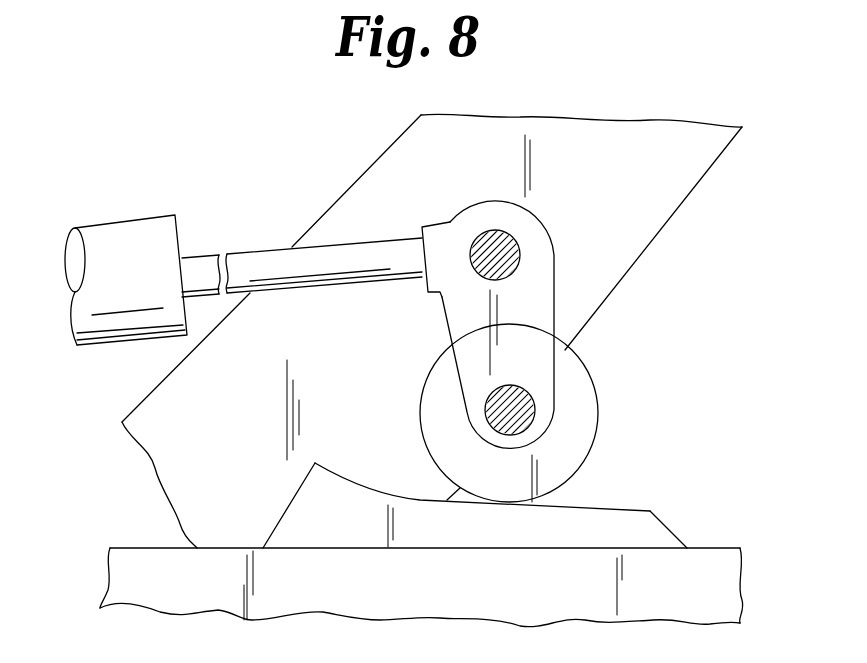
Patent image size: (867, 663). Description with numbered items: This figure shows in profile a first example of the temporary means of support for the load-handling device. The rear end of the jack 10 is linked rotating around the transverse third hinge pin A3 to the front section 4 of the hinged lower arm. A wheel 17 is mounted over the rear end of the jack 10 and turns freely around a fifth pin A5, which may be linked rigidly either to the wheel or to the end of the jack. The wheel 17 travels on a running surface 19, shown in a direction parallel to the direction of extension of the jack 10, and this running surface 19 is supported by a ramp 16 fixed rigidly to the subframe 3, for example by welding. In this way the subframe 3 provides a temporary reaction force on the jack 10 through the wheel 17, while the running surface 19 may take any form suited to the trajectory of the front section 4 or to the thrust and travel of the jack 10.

The jack 10 is at (137, 226).
The front section 4 is at (585, 285).
The third hinge pin A3 is at (507, 258).
The fifth pin A5 is at (530, 407).
The wheel 17 is at (598, 437).
The running surface 19 is at (609, 508).
The ramp 16 is at (645, 527).
The subframe 3 is at (723, 557).